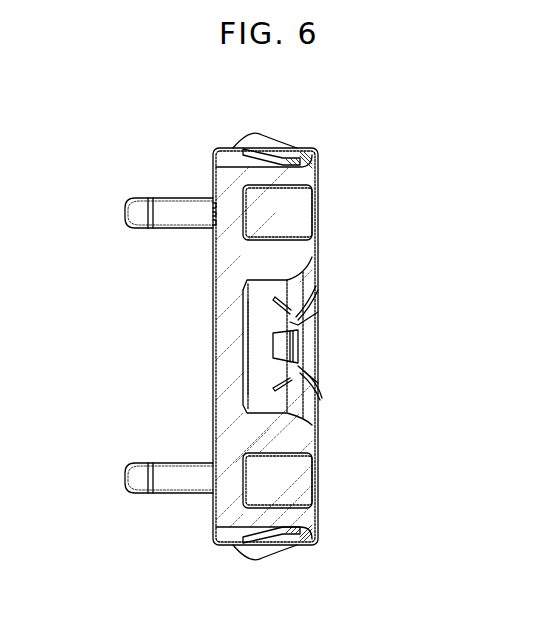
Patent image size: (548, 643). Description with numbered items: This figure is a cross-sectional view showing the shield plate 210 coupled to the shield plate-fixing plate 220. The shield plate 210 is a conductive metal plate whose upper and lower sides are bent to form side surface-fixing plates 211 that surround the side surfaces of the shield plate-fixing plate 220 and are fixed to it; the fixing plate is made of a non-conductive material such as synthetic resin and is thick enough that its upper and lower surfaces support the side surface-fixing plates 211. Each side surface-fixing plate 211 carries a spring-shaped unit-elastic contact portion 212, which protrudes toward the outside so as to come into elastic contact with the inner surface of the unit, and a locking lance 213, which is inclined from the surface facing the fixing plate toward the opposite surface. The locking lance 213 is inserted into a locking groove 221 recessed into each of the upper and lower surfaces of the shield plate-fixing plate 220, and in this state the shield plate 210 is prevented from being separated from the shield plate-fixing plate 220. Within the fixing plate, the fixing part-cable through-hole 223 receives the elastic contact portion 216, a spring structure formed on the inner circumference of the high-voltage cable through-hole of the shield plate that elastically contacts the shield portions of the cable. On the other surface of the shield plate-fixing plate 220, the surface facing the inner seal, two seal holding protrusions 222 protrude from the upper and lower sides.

The shield plate 210 is at (323, 210).
The side surface-fixing plate 211 is at (281, 148).
The unit-elastic contact portion 212 is at (258, 136).
The locking lance 213 is at (265, 560).
The elastic contact portion 216 is at (283, 348).
The shield plate-fixing plate 220 is at (213, 318).
The locking groove 221 is at (213, 146).
The seal holding protrusion 222 is at (185, 473).
The fixing part-cable through-hole 223 is at (257, 388).